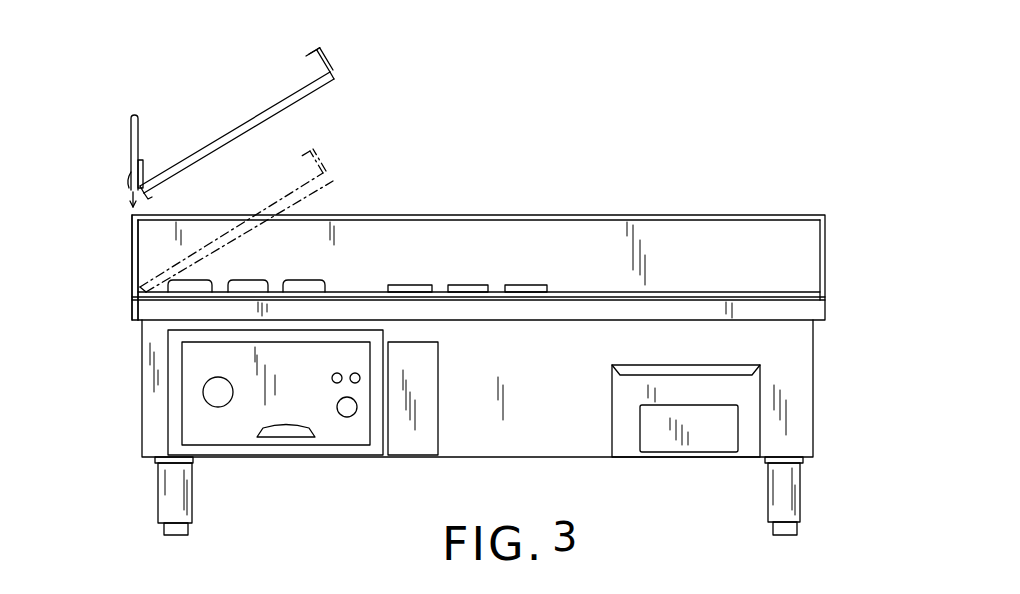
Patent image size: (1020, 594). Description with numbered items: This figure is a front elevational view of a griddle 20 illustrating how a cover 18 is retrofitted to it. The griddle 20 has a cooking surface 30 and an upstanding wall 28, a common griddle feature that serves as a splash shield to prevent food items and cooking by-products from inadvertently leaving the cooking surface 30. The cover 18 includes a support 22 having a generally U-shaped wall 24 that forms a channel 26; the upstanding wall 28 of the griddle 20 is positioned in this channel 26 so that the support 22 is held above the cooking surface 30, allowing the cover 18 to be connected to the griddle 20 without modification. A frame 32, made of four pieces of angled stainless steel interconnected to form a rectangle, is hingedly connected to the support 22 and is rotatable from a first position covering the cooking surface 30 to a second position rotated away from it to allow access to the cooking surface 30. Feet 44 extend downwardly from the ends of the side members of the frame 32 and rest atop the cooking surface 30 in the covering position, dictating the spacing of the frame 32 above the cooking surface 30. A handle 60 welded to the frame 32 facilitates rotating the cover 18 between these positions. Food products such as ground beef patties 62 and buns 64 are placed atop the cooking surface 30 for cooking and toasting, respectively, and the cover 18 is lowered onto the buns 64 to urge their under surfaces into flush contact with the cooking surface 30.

The cover 18 is at (317, 121).
The griddle 20 is at (837, 368).
The support 22 is at (142, 153).
The U-shaped wall 24 is at (143, 170).
The channel 26 is at (127, 182).
The upstanding wall 28 is at (130, 263).
The cooking surface 30 is at (578, 285).
The frame 32 is at (330, 73).
The feet 44 is at (336, 81).
The handle 60 is at (311, 46).
The ground beef patties 62 is at (418, 285).
The buns 64 is at (200, 286).